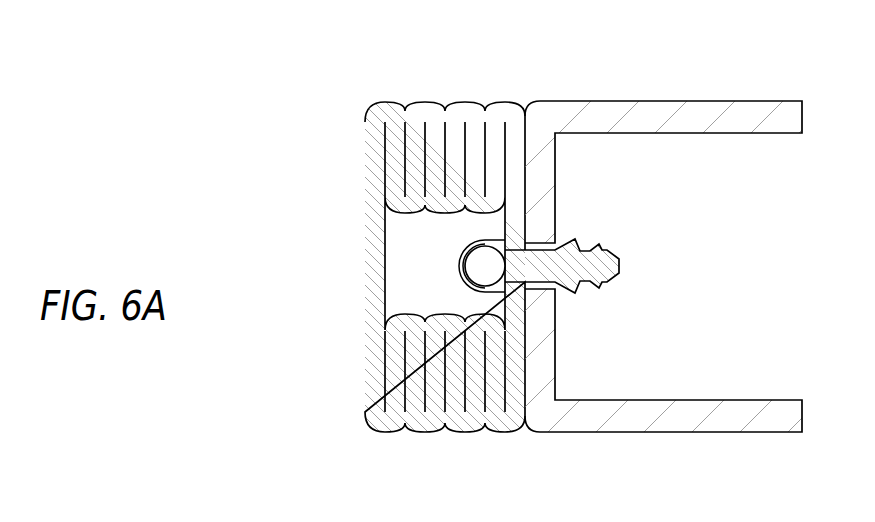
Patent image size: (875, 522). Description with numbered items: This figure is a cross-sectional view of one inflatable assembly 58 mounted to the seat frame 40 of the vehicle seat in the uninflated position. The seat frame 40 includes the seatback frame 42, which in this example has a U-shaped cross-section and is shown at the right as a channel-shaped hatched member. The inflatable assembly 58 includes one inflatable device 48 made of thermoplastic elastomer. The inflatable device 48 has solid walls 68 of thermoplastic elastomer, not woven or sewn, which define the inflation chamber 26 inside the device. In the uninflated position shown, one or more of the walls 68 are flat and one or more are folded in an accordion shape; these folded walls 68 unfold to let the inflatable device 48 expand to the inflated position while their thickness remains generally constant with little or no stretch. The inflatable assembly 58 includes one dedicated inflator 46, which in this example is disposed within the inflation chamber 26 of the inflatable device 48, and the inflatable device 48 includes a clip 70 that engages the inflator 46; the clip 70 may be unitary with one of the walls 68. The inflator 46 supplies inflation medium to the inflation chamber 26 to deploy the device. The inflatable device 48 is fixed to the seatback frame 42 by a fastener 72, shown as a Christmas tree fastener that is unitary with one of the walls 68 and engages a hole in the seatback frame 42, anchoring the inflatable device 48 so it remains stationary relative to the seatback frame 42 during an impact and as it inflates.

The inflation chamber 26 is at (405, 291).
The seat frame 40 is at (553, 249).
The seatback frame 42 is at (580, 100).
The inflator 46 is at (463, 267).
The inflatable device 48 is at (365, 165).
The inflatable assembly 58 is at (380, 276).
The walls 68 is at (423, 100).
The clip 70 is at (478, 297).
The fastener 72 is at (627, 265).